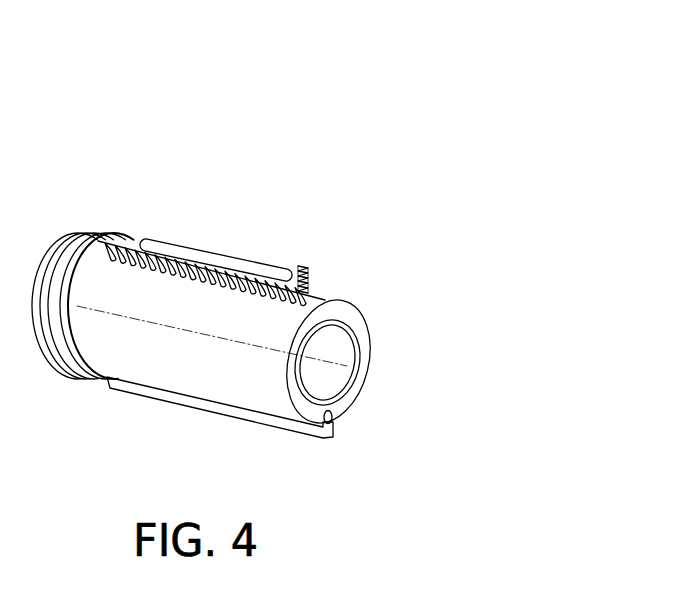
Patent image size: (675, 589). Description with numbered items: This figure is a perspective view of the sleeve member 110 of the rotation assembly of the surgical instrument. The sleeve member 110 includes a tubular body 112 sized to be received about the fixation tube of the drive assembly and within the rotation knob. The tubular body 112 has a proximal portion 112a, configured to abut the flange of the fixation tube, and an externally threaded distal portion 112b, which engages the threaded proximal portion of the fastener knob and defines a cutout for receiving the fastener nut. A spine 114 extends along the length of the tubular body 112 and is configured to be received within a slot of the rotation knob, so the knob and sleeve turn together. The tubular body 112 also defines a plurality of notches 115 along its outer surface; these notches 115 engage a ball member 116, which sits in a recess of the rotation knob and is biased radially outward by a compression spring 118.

The sleeve member 110 is at (249, 158).
The tubular body 112 is at (148, 357).
The proximal portion 112a is at (365, 333).
The externally threaded distal portion 112b is at (96, 232).
The spine 114 is at (213, 413).
The notches 115 is at (222, 243).
The ball member 116 is at (322, 291).
The compression spring 118 is at (302, 262).